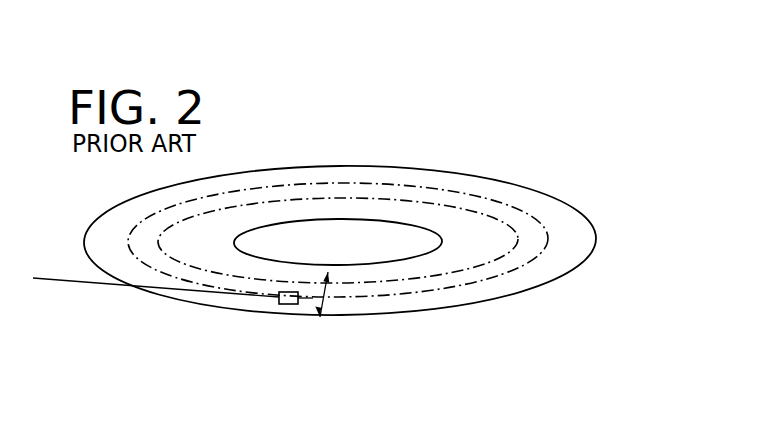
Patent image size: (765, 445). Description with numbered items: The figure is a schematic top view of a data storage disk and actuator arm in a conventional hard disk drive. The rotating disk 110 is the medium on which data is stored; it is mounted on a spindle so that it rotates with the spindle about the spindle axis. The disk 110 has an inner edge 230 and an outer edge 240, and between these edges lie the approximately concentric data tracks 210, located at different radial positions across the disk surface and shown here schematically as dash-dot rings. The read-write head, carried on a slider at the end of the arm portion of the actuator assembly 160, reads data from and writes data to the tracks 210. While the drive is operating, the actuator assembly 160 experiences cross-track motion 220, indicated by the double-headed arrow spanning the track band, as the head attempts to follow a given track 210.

The disk 110 is at (358, 157).
The actuator assembly 160 is at (200, 297).
The data tracks 210 is at (393, 187).
The cross-track motion 220 is at (330, 296).
The inner edge 230 is at (425, 257).
The outer edge 240 is at (473, 177).